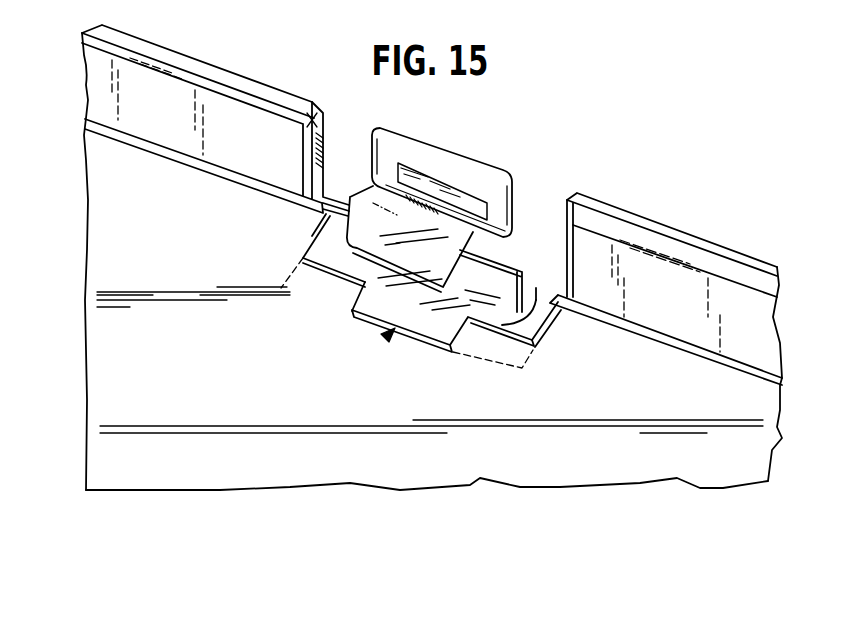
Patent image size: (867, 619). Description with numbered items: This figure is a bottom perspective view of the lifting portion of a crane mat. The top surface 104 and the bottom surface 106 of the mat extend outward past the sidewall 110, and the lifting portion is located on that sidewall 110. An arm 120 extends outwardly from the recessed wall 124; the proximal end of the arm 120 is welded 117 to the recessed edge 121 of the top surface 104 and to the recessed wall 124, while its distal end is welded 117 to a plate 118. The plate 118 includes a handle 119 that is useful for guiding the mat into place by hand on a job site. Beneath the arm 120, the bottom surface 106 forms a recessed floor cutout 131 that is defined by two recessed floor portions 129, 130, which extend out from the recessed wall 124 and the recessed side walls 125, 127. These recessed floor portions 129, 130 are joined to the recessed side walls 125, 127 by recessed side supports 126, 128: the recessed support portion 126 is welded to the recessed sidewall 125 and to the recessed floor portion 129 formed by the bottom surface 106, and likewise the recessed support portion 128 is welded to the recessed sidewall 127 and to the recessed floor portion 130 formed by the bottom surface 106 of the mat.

The top surface 104 is at (652, 230).
The bottom surface 106 is at (748, 390).
The sidewall 110 is at (672, 293).
The weld 117 is at (322, 222).
The plate 118 is at (452, 162).
The handle 119 is at (488, 215).
The arm 120 is at (355, 196).
The recessed edge 121 is at (573, 227).
The recessed wall 124 is at (435, 313).
The recessed side wall 125 is at (313, 125).
The recessed support portion 126 is at (312, 248).
The recessed side wall 127 is at (558, 242).
The recessed support portion 128 is at (518, 330).
The recessed floor portion 129 is at (357, 290).
The recessed floor portion 130 is at (515, 327).
The recessed floor cutout 131 is at (380, 343).